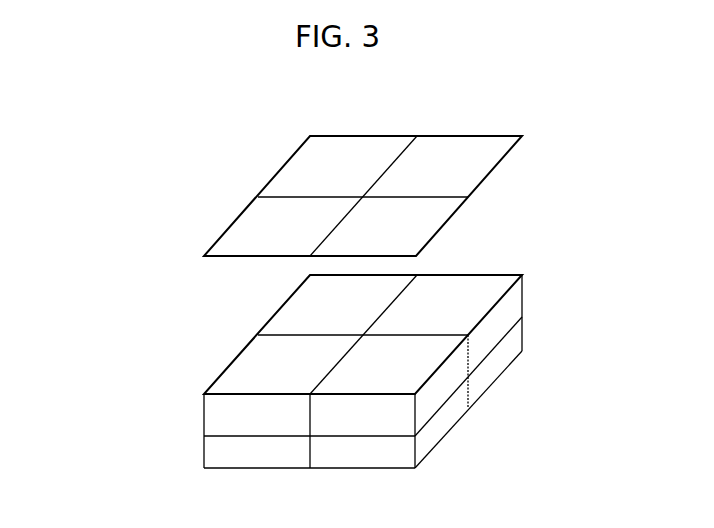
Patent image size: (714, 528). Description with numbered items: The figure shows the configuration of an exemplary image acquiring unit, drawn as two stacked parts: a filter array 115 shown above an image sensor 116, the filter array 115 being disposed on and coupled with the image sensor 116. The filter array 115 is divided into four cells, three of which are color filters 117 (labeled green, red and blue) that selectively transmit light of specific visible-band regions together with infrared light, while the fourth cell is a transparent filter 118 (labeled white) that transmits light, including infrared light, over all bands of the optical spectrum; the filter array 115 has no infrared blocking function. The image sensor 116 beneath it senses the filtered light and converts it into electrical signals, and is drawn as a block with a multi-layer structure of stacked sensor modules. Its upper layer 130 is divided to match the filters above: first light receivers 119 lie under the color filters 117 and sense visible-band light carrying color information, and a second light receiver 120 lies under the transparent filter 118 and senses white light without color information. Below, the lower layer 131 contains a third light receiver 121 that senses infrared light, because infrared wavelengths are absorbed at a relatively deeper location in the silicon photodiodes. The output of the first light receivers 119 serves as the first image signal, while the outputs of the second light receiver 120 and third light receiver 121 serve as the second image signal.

The filter array 115 is at (224, 192).
The image sensor 116 is at (201, 350).
The color filter 117 is at (363, 196).
The transparent filter 118 is at (382, 215).
The first light receiver 119 is at (363, 371).
The second light receiver 120 is at (380, 345).
The third light receiver 121 is at (363, 389).
The upper layer 130 is at (538, 278).
The lower layer 131 is at (538, 317).